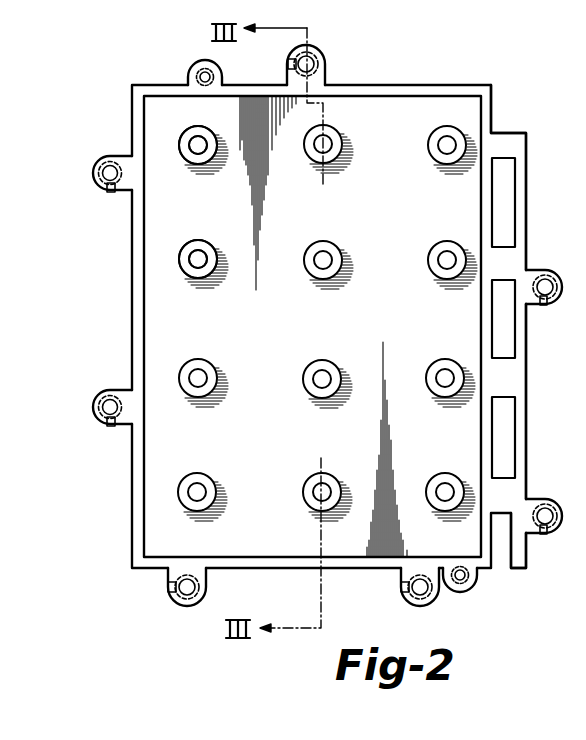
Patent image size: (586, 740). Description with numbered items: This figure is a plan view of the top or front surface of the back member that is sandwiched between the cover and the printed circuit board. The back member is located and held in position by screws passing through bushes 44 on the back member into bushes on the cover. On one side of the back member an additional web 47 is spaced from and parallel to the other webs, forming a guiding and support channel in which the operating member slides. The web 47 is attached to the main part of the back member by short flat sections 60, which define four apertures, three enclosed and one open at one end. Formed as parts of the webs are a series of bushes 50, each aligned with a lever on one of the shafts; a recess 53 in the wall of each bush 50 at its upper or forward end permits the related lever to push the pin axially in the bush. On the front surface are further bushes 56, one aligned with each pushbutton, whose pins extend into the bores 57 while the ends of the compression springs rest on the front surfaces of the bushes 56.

The bush 44 is at (470, 593).
The additional web 47 is at (520, 443).
The bush 50 is at (423, 603).
The recess 53 is at (402, 587).
The bush 56 is at (197, 243).
The bore 57 is at (448, 148).
The short flat section 60 is at (503, 496).